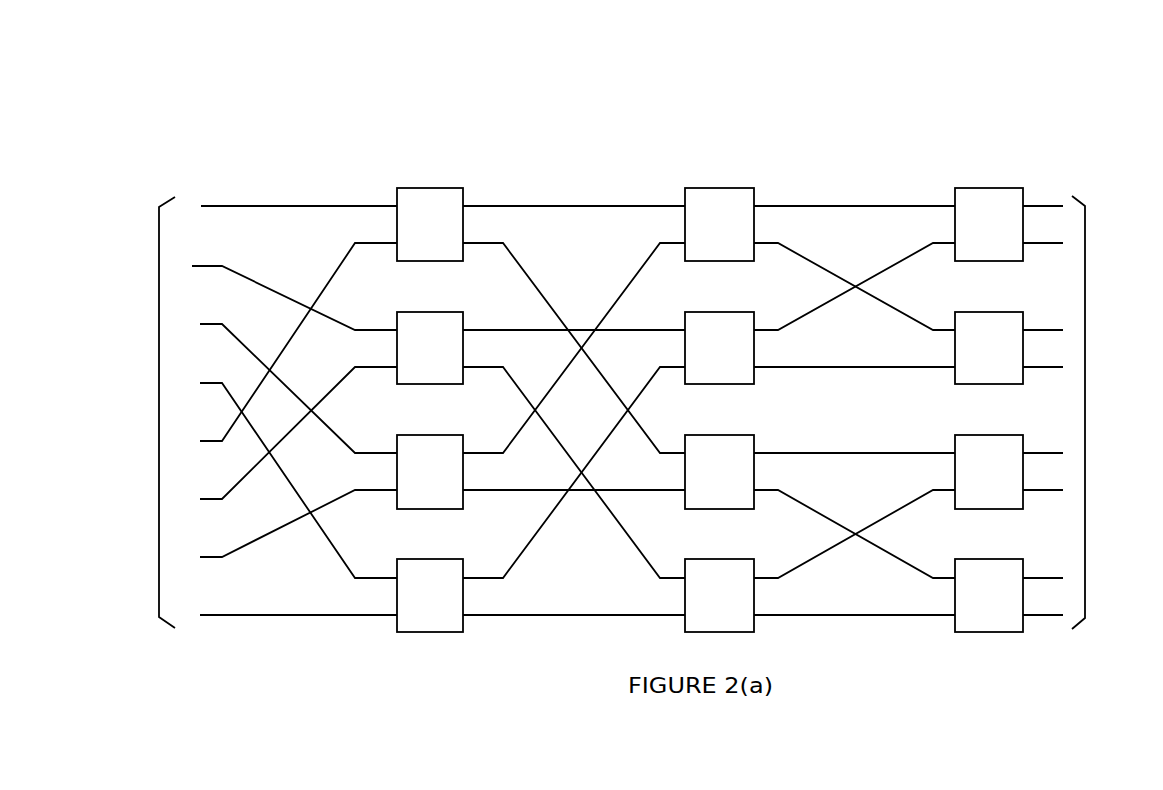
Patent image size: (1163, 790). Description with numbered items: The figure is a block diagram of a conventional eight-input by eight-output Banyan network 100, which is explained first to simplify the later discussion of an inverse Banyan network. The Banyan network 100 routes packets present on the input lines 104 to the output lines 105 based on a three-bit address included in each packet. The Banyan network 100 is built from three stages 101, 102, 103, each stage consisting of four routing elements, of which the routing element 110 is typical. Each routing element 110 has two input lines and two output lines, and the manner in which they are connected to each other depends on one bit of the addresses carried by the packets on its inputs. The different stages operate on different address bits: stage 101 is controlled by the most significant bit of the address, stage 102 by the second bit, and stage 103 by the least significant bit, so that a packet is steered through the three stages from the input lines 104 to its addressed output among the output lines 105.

The Banyan network 100 is at (326, 112).
The first stage 101 is at (435, 152).
The second stage 102 is at (718, 152).
The third stage 103 is at (992, 152).
The input lines 104 is at (158, 412).
The output lines 105 is at (1085, 414).
The routing element 110 is at (442, 208).